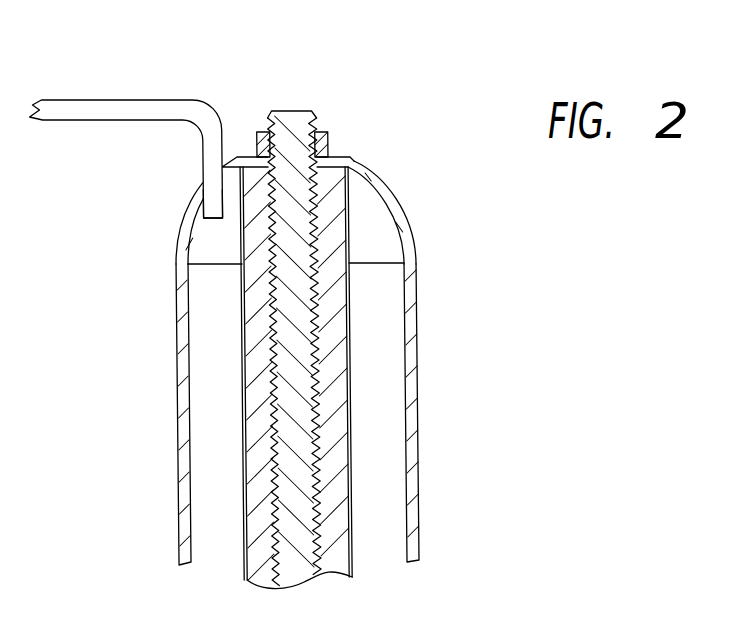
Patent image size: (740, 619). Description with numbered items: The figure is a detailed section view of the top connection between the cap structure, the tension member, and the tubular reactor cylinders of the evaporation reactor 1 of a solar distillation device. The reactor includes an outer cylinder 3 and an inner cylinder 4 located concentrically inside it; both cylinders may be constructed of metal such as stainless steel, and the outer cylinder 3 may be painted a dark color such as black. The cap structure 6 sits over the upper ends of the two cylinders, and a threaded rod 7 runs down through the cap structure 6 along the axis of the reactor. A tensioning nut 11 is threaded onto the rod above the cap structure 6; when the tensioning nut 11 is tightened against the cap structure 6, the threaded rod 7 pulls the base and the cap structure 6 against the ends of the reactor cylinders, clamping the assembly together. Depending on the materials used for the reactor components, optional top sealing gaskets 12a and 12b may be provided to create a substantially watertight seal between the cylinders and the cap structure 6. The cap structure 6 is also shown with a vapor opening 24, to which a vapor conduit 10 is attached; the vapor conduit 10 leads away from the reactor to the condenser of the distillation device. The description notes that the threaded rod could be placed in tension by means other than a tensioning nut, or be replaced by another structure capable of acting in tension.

The evaporation reactor 1 is at (277, 310).
The outer cylinder 3 is at (417, 408).
The inner cylinder 4 is at (347, 372).
The cap structure 6 is at (395, 198).
The threaded rod 7 is at (290, 111).
The vapor conduit 10 is at (108, 98).
The tensioning nut 11 is at (330, 145).
The top sealing gasket 12a is at (360, 172).
The top sealing gasket 12b is at (415, 263).
The vapor opening 24 is at (215, 184).